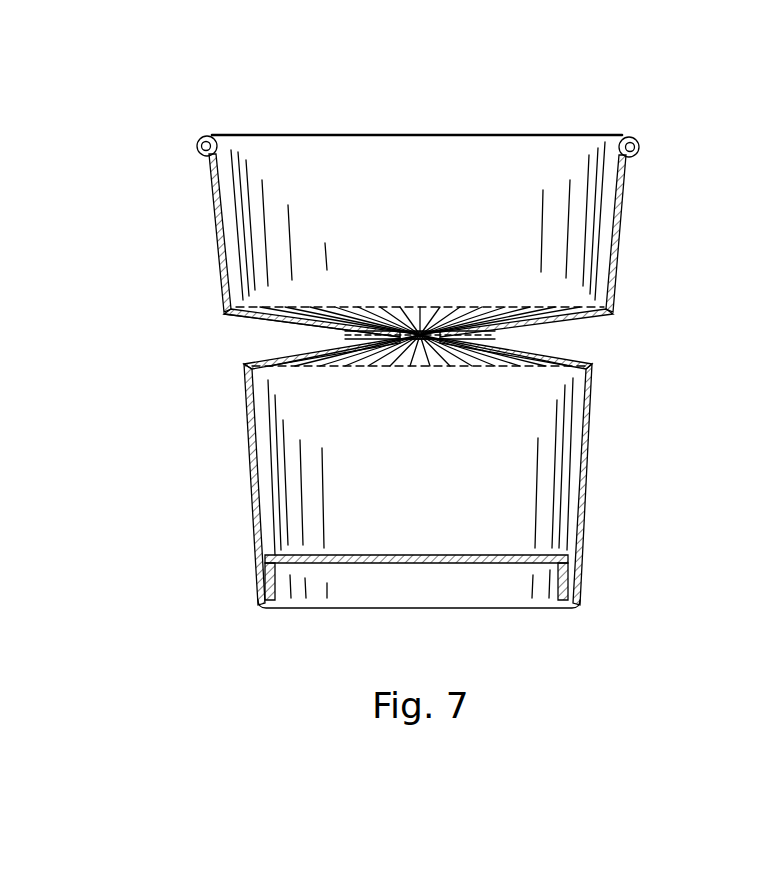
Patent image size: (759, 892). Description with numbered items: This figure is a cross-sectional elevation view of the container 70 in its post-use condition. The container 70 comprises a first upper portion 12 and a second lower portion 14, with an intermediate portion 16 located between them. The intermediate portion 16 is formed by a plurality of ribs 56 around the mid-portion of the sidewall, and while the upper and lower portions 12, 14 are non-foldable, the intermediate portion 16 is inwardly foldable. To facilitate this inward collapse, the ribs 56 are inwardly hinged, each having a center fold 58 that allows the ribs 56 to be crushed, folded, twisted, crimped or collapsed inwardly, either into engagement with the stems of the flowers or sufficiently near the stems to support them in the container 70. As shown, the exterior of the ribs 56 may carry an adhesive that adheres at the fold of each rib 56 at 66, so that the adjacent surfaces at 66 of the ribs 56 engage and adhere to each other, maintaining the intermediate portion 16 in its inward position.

The container 70 is at (504, 103).
The first upper portion 12 is at (620, 216).
The second lower portion 14 is at (588, 468).
The intermediate portion 16 is at (633, 305).
The ribs 56 is at (278, 317).
The center fold 58 is at (388, 332).
The adhering surfaces of the ribs 66 is at (360, 340).